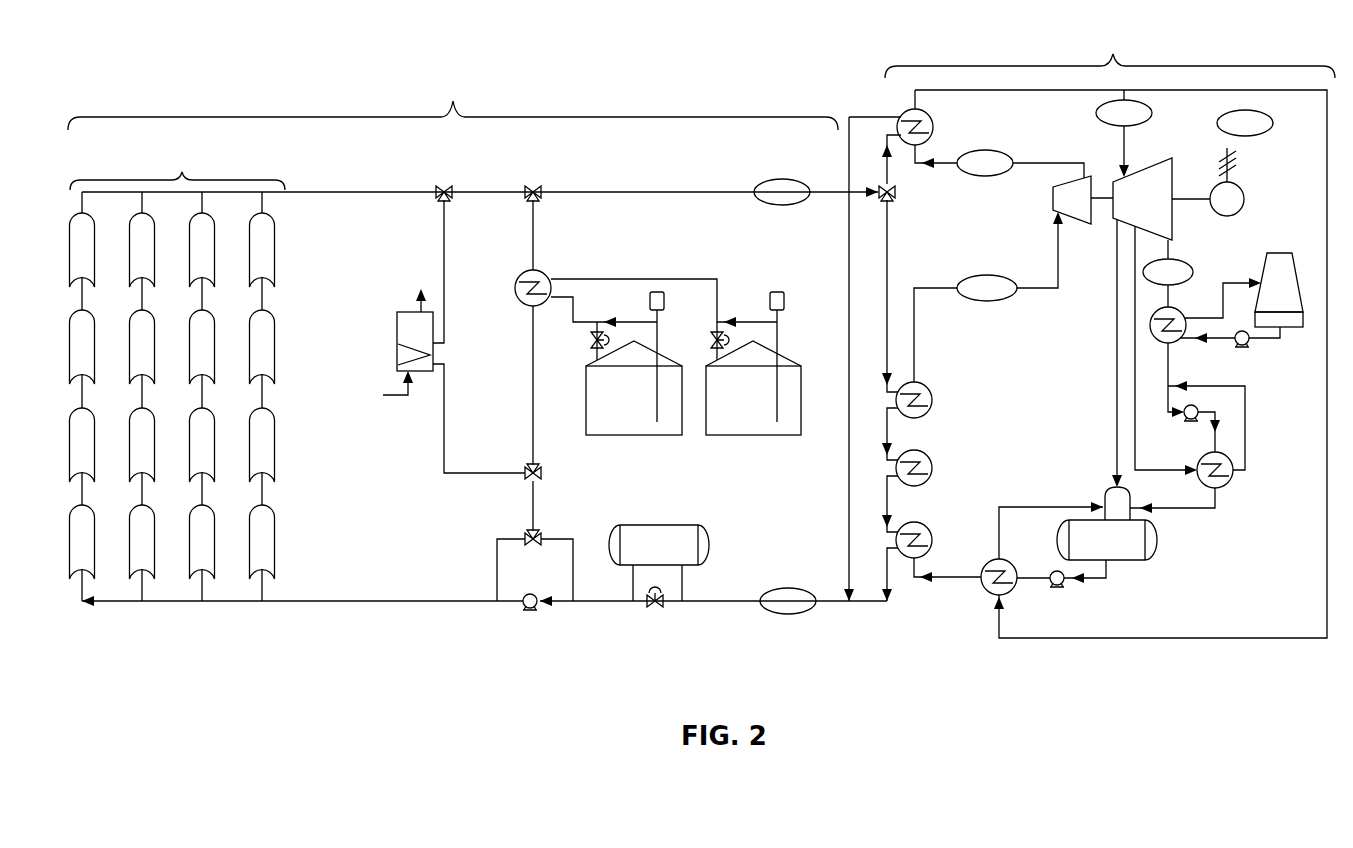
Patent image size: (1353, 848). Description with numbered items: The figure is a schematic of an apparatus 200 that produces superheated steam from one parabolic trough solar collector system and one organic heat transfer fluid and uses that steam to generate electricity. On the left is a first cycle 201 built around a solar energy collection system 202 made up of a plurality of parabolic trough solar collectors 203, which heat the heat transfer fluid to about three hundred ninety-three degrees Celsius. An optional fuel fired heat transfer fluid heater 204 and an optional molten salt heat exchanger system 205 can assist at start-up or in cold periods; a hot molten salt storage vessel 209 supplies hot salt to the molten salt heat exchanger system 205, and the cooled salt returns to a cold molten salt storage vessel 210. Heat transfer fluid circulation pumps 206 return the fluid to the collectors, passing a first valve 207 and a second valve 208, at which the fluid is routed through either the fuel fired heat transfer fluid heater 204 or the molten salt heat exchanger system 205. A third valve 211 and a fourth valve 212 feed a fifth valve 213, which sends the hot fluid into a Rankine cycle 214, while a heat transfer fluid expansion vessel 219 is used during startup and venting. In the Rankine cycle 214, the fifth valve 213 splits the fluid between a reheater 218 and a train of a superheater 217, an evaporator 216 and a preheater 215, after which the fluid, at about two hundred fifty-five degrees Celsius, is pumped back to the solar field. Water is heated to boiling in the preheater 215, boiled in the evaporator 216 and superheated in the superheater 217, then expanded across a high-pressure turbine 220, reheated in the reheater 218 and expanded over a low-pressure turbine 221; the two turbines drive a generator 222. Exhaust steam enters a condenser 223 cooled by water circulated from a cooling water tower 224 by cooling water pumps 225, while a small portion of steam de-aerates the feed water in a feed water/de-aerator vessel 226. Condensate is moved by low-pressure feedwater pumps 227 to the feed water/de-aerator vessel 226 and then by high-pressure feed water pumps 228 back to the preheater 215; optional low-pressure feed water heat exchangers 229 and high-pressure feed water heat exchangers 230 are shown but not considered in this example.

The apparatus 200 is at (280, 50).
The first cycle 201 is at (477, 360).
The solar energy collection system 202 is at (478, 373).
The parabolic trough solar collectors 203 is at (276, 253).
The fuel fired heat transfer fluid heater 204 is at (397, 343).
The molten salt heat exchanger system 205 is at (548, 279).
The heat transfer fluid circulation pumps 206 is at (535, 608).
The first valve 207 is at (543, 538).
The second valve 208 is at (542, 476).
The hot molten salt storage vessel 209 is at (745, 437).
The cold molten salt storage vessel 210 is at (617, 437).
The third valve 211 is at (449, 187).
The fourth valve 212 is at (538, 187).
The fifth valve 213 is at (893, 196).
The Rankine cycle 214 is at (1089, 327).
The preheater 215 is at (932, 547).
The evaporator 216 is at (932, 473).
The superheater 217 is at (932, 405).
The reheater 218 is at (933, 134).
The heat transfer fluid expansion vessel 219 is at (690, 524).
The high-pressure turbine 220 is at (1075, 224).
The low-pressure turbine 221 is at (1138, 168).
The generator 222 is at (1248, 205).
The condenser 223 is at (1170, 345).
The cooling water tower 224 is at (1275, 255).
The cooling water pumps 225 is at (1250, 344).
The feed water/de-aerator vessel 226 is at (1160, 537).
The low-pressure feedwater pumps 227 is at (1193, 420).
The high-pressure feed water pumps 228 is at (1063, 588).
The low-pressure feed water heat exchangers 229 is at (1224, 489).
The high-pressure feed water heat exchangers 230 is at (983, 584).